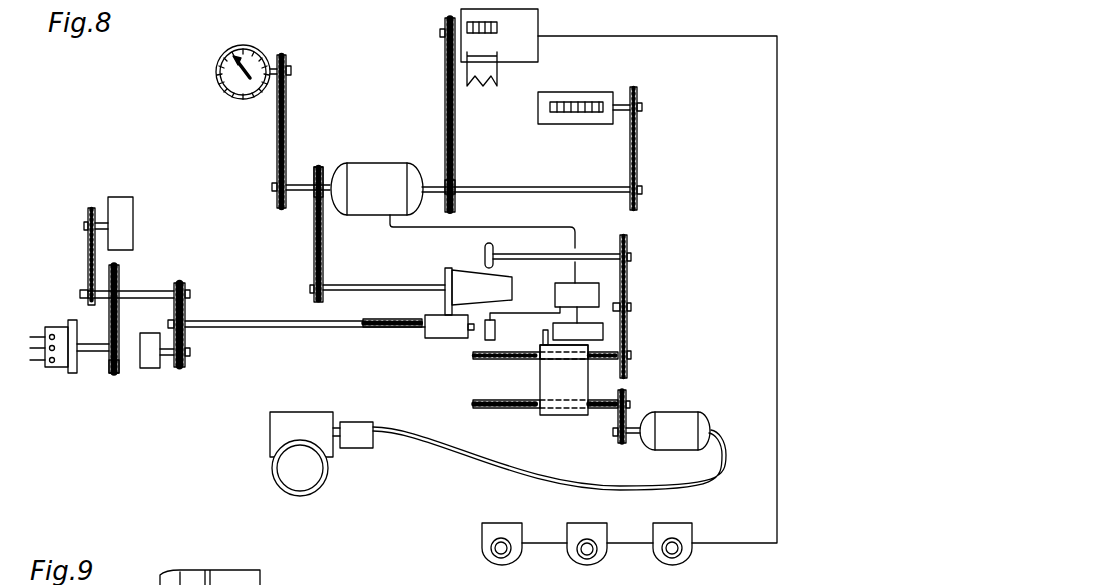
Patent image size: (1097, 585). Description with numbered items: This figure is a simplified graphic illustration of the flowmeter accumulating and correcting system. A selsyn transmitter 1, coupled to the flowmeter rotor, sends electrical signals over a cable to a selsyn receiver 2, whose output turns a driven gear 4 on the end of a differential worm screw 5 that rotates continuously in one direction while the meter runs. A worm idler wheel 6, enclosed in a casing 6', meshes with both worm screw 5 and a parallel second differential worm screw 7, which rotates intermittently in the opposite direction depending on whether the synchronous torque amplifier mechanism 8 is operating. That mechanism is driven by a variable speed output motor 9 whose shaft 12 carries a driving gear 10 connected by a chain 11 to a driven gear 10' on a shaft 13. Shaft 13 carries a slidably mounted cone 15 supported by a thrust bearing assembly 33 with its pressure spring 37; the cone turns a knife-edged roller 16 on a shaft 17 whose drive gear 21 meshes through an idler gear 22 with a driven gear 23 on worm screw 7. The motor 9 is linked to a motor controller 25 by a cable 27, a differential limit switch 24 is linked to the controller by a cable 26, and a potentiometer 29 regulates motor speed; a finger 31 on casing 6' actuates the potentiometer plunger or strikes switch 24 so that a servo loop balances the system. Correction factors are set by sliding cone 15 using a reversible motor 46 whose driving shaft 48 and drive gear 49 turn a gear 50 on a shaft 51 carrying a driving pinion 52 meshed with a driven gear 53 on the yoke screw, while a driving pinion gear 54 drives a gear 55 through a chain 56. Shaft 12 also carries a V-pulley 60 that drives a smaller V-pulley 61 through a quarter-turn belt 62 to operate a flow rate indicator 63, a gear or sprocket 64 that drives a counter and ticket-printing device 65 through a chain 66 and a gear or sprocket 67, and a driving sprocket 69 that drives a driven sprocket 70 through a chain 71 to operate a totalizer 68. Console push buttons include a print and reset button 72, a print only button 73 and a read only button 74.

In FIG. 8, the selsyn transmitter 1 is at (360, 422).
In FIG. 8, the selsyn receiver 2 is at (680, 439).
In FIG. 8, the driven gear 4 is at (626, 398).
In FIG. 8, the differential worm screw 5 is at (473, 408).
In FIG. 8, the worm idler wheel 6 is at (551, 380).
In FIG. 8, the casing 6' is at (549, 364).
In FIG. 8, the second differential worm screw 7 is at (473, 359).
In FIG. 8, the synchronous torque amplifier mechanism 8 is at (396, 330).
In FIG. 8, the variable speed output motor 9 is at (376, 197).
In FIG. 8, the driving gear 10 is at (331, 169).
In FIG. 8, the driven gear 10' is at (300, 299).
In FIG. 8, the chain 11 is at (314, 247).
In FIG. 8, the shaft 12 is at (295, 184).
In FIG. 8, the shaft 13 is at (616, 438).
In FIG. 8, the cone 15 is at (479, 294).
In FIG. 8, the roller 16 is at (485, 249).
In FIG. 8, the shaft 17 is at (537, 248).
In FIG. 8, the drive gear 21 is at (627, 268).
In FIG. 8, the idler gear 22 is at (627, 294).
In FIG. 8, the driven gear 23 is at (627, 363).
In FIG. 8, the differential limit switch 24 is at (495, 328).
In FIG. 8, the motor controller 25 is at (583, 301).
In FIG. 8, the cable 26 is at (525, 315).
In FIG. 8, the cable 27 is at (576, 232).
In FIG. 8, the potentiometer 29 is at (578, 331).
In FIG. 8, the finger 31 is at (543, 338).
In FIG. 8, the thrust bearing assembly 33 is at (410, 284).
In FIG. 8, the pressure spring 37 is at (133, 221).
In FIG. 8, the reversible motor 46 is at (54, 369).
In FIG. 8, the driving shaft 48 is at (96, 365).
In FIG. 8, the drive gear 49 is at (113, 375).
In FIG. 8, the gear 50 is at (119, 284).
In FIG. 8, the shaft 51 is at (156, 289).
In FIG. 8, the driving pinion 52 is at (182, 286).
In FIG. 8, the driven gear 53 is at (185, 310).
In FIG. 8, the driving pinion gear 54 is at (80, 291).
In FIG. 8, the gear 55 is at (84, 230).
In FIG. 8, the chain 56 is at (88, 258).
In FIG. 8, the V-pulley 60 is at (272, 200).
In FIG. 8, the smaller V-pulley 61 is at (291, 76).
In FIG. 8, the quarter-turn belt 62 is at (287, 119).
In FIG. 8, the flow rate indicator 63 is at (216, 78).
In FIG. 8, the gear or sprocket 64 is at (455, 179).
In FIG. 8, the counter and ticket-printing device 65 is at (524, 42).
In FIG. 9, the counter and ticket-printing device 65 is at (247, 568).
In FIG. 8, the chain 66 is at (455, 143).
In FIG. 8, the gear or sprocket 67 is at (445, 39).
In FIG. 8, the totalizer 68 is at (574, 124).
In FIG. 8, the driving sprocket 69 is at (637, 187).
In FIG. 8, the driven sprocket 70 is at (637, 97).
In FIG. 8, the chain 71 is at (637, 139).
In FIG. 8, the print and reset button 72 is at (501, 556).
In FIG. 8, the print only button 73 is at (587, 557).
In FIG. 8, the read only button 74 is at (672, 556).